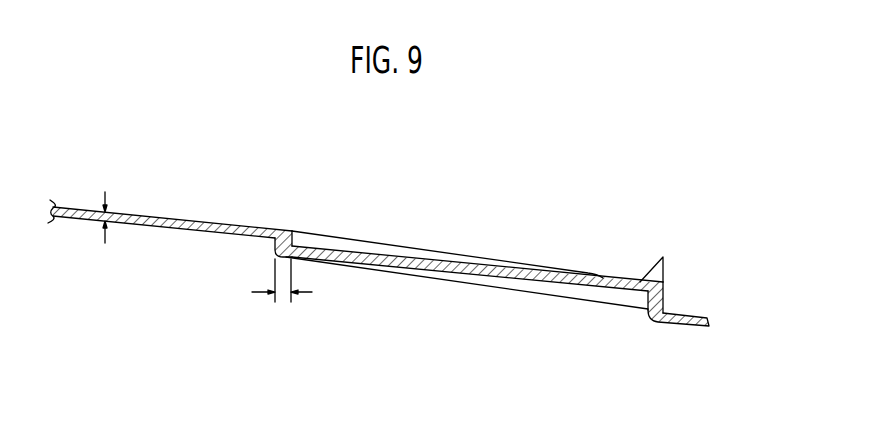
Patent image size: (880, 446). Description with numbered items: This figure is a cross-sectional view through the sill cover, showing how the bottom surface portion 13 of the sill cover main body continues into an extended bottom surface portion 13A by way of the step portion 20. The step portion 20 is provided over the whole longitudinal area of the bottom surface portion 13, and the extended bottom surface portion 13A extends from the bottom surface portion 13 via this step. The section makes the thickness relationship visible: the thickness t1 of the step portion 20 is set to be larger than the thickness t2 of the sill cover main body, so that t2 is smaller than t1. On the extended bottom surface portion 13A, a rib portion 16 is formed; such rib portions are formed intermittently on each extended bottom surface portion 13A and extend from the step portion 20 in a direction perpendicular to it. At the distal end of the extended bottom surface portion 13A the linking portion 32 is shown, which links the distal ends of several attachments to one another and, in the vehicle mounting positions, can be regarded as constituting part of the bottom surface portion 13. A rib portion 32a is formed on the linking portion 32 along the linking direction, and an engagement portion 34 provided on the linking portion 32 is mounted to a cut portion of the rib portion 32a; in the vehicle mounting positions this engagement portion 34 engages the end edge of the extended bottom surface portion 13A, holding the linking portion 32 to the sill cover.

The bottom surface portion 13 is at (182, 233).
The extended bottom surface portion 13A is at (410, 268).
The step portion 20 is at (288, 227).
The rib portion 16 is at (362, 245).
The linking portion 32 is at (681, 326).
The rib portion 32a is at (665, 295).
The engagement portion 34 is at (662, 256).
The thickness of step portion t1 is at (277, 302).
The thickness of sill cover main body t2 is at (117, 203).